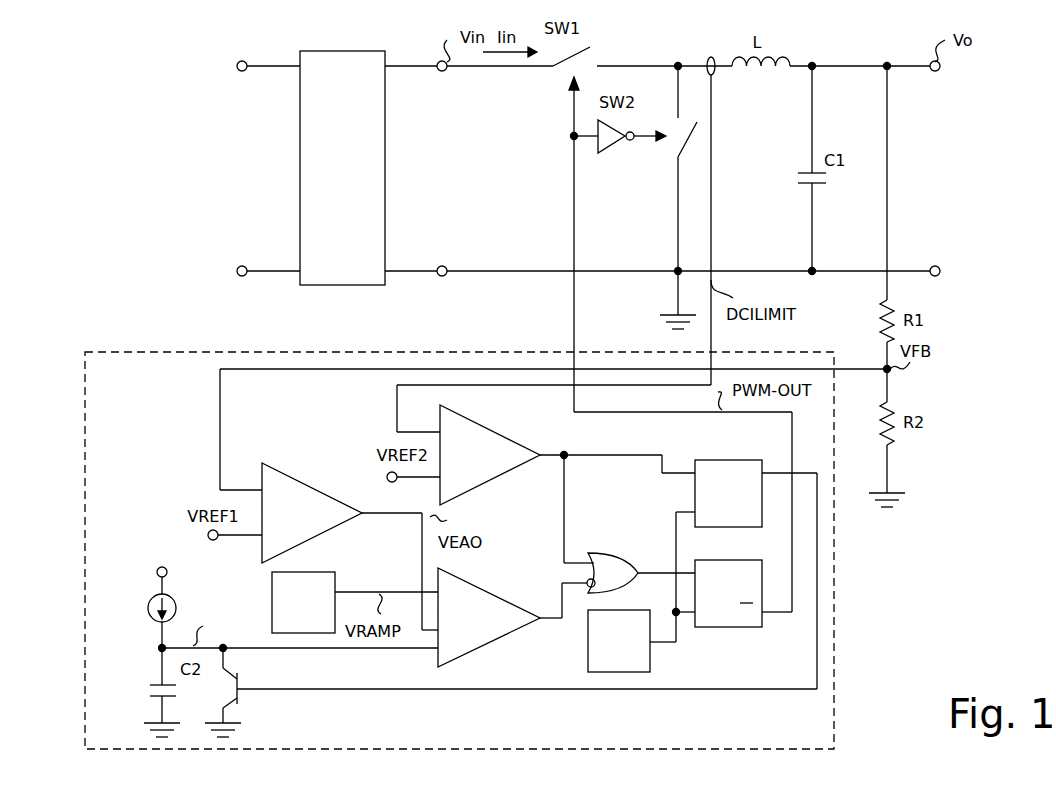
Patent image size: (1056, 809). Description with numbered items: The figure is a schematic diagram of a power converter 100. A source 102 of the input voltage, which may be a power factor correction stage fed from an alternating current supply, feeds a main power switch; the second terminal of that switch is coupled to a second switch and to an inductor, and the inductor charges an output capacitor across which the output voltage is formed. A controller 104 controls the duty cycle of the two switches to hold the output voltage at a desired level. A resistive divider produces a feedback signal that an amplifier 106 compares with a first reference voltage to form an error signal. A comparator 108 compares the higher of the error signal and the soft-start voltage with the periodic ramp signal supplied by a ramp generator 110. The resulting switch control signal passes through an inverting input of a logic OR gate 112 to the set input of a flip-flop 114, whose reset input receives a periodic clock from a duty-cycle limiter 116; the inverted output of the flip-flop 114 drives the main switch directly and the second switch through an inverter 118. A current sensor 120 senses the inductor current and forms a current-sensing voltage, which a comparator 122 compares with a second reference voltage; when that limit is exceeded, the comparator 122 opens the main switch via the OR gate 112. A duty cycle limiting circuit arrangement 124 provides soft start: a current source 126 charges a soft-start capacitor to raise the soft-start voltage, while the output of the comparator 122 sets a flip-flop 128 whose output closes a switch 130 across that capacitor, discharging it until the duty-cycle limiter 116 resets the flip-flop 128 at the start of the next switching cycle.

The power converter 100 is at (200, 228).
The source of the input voltage 102 is at (332, 51).
The controller 104 is at (150, 352).
The amplifier 106 is at (287, 472).
The comparator 108 is at (481, 582).
The ramp generator 110 is at (323, 572).
The logic OR gate 112 is at (613, 552).
The flip-flop 114 is at (740, 627).
The duty-cycle limiter 116 is at (587, 666).
The inverter 118 is at (613, 145).
The current sensor 120 is at (709, 58).
The comparator 122 is at (492, 424).
The duty cycle limiting circuit arrangement 124 is at (141, 652).
The current source 126 is at (175, 596).
The flip-flop 128 is at (713, 456).
The switch 130 is at (241, 692).